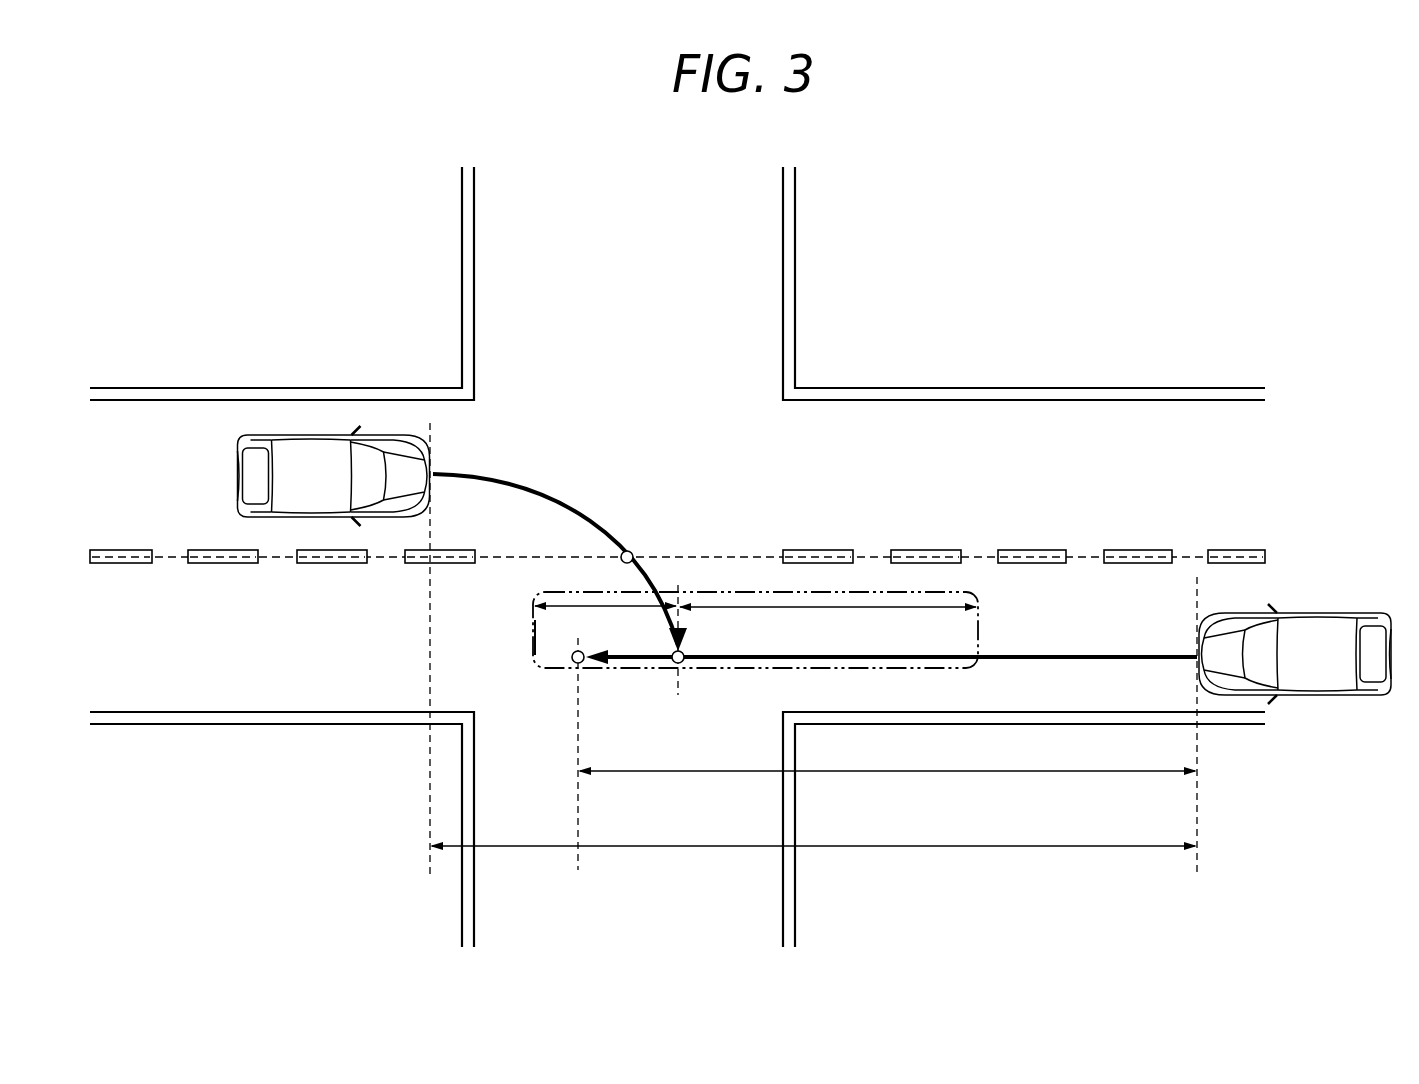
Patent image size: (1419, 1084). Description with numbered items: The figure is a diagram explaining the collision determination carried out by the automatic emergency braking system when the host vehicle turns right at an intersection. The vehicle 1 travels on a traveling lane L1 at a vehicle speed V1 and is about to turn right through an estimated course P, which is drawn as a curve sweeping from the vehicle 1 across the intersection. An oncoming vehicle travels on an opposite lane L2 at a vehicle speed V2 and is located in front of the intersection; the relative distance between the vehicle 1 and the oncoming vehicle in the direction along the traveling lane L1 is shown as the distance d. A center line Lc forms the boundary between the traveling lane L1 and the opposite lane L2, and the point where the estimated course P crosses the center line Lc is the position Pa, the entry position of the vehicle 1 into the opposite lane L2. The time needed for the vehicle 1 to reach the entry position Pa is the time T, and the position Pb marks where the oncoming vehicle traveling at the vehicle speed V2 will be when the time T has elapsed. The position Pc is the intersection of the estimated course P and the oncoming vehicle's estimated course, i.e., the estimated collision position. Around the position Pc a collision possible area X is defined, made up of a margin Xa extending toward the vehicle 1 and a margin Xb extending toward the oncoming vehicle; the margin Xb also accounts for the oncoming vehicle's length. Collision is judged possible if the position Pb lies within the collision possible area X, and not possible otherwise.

The vehicle 1 is at (385, 430).
The vehicle speed V1 is at (334, 430).
The vehicle speed V2 is at (1343, 600).
The traveling lane L1 is at (150, 430).
The opposite lane L2 is at (197, 650).
The center line Lc is at (130, 564).
The estimated course P is at (575, 497).
The position (entry position) Pa is at (629, 549).
The position Pb is at (573, 663).
The position (estimated collision position) Pc is at (675, 664).
The time T is at (661, 526).
The collision possible area X is at (981, 615).
The margin Xa is at (613, 608).
The margin Xb is at (845, 609).
The relative distance d is at (742, 848).